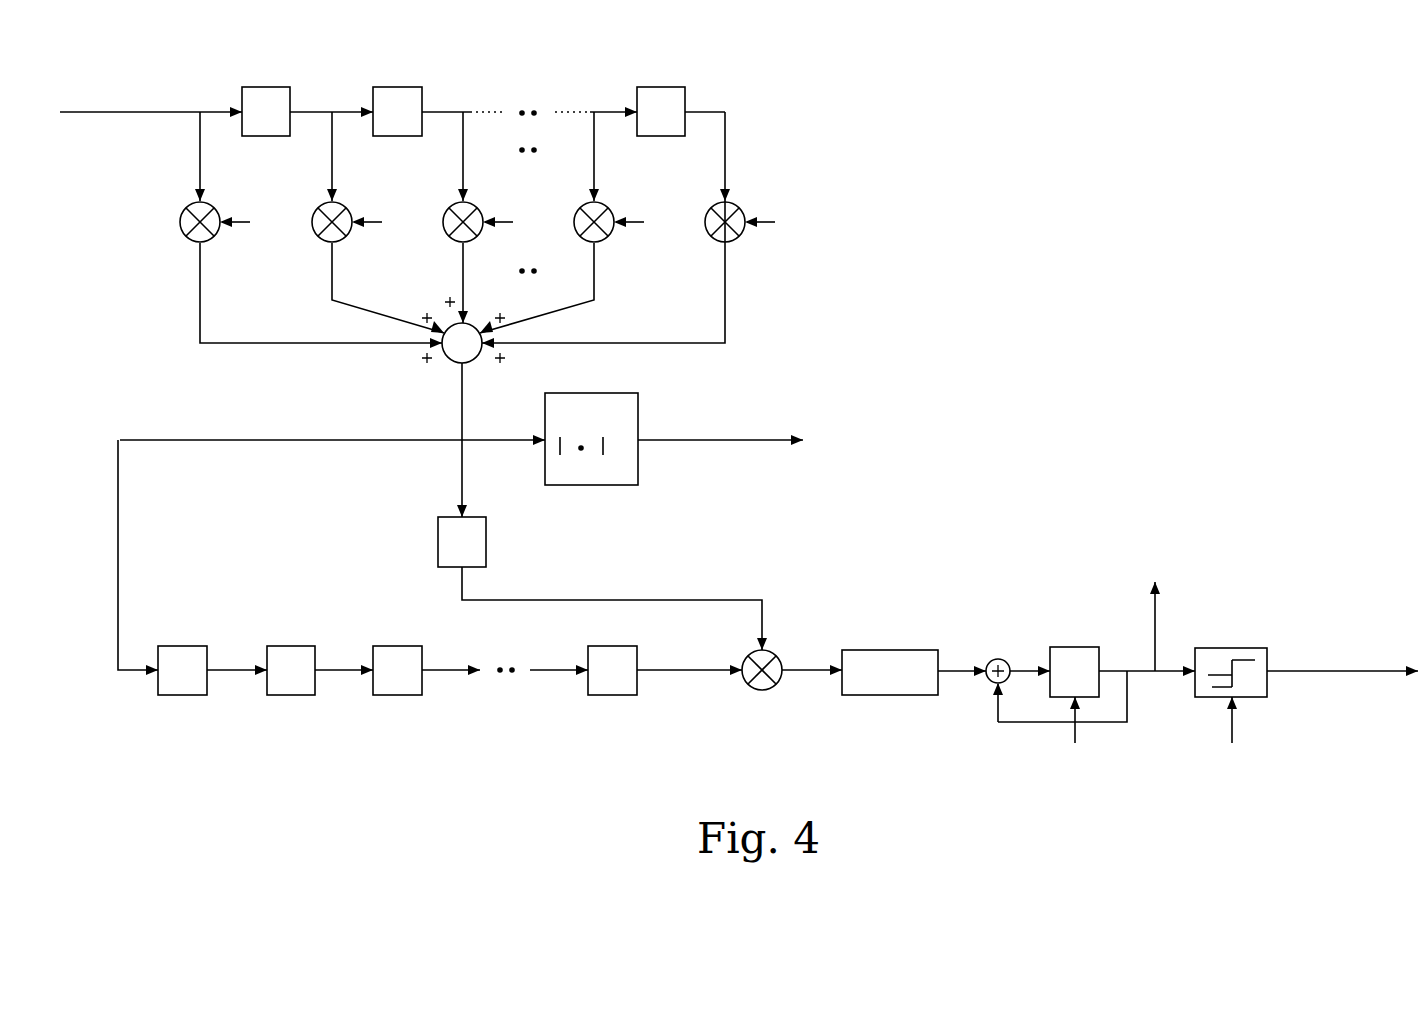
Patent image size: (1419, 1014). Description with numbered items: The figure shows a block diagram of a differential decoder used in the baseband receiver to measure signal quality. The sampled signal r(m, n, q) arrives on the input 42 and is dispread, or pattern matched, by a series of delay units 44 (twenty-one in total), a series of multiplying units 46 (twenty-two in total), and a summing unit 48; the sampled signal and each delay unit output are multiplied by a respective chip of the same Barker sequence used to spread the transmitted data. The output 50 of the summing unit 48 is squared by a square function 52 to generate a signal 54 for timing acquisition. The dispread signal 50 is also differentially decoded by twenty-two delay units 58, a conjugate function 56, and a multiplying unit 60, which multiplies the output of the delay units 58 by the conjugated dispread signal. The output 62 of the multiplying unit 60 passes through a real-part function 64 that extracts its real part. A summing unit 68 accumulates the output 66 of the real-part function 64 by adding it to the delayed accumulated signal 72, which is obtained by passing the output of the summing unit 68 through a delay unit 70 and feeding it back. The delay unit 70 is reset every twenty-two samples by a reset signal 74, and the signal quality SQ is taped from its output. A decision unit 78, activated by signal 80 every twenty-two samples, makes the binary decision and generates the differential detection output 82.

The input 42 is at (82, 113).
The delay units 44 is at (713, 72).
The multiplying units 46 is at (162, 192).
The summing unit 48 is at (452, 360).
The output of the summing unit 50 is at (463, 400).
The square function 52 is at (593, 485).
The signal 54 is at (680, 440).
The conjugate function 56 is at (438, 542).
The delay units 58 is at (645, 715).
The multiplying unit 60 is at (763, 692).
The output of the multiplying unit 62 is at (808, 670).
The real-part function 64 is at (888, 650).
The output of the real-part function 66 is at (958, 671).
The summing unit 68 is at (997, 659).
The delay unit 70 is at (1073, 647).
The delayed accumulated signal 72 is at (992, 702).
The reset signal 74 is at (1075, 733).
The decision unit 78 is at (1230, 648).
The signal 80 is at (1232, 720).
The differential detection output 82 is at (1330, 671).